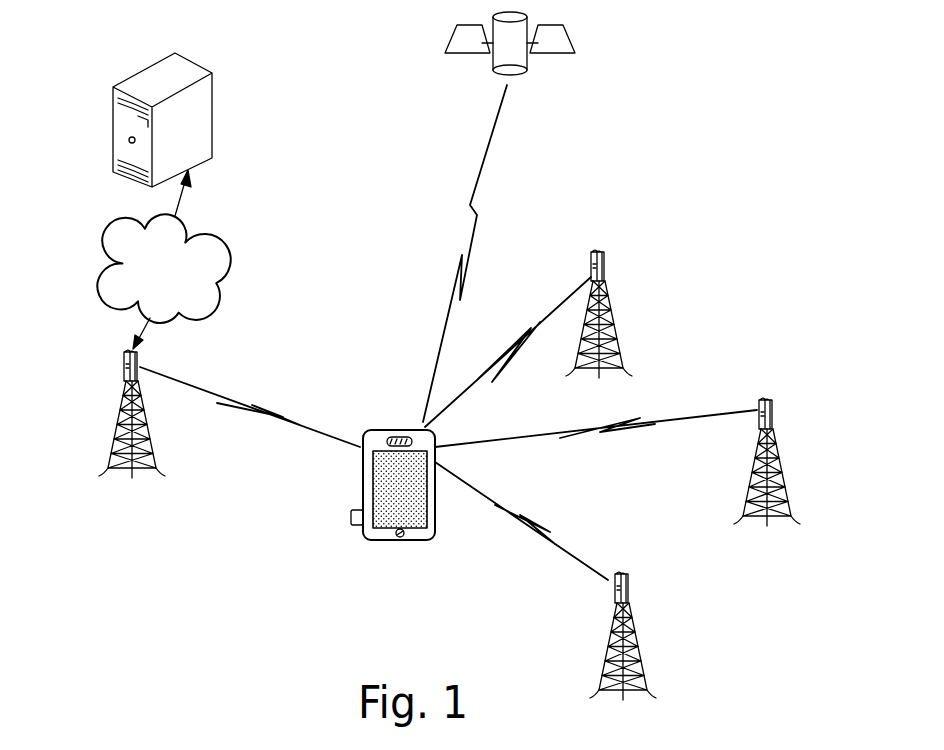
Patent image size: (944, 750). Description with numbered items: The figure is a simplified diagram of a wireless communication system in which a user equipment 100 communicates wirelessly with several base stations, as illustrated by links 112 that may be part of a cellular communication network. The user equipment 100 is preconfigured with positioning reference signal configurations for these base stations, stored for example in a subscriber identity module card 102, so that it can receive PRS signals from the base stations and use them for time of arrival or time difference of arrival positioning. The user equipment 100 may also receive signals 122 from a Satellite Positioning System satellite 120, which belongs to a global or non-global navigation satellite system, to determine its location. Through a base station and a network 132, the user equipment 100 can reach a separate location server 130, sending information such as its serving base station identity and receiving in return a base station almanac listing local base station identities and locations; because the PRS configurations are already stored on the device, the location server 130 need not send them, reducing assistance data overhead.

The user equipment 100 is at (362, 490).
The subscriber identity module card 102 is at (350, 523).
The links 112 is at (283, 416).
The SPS satellite 120 is at (497, 75).
The signals 122 is at (488, 162).
The location server 130 is at (213, 115).
The network 132 is at (205, 232).